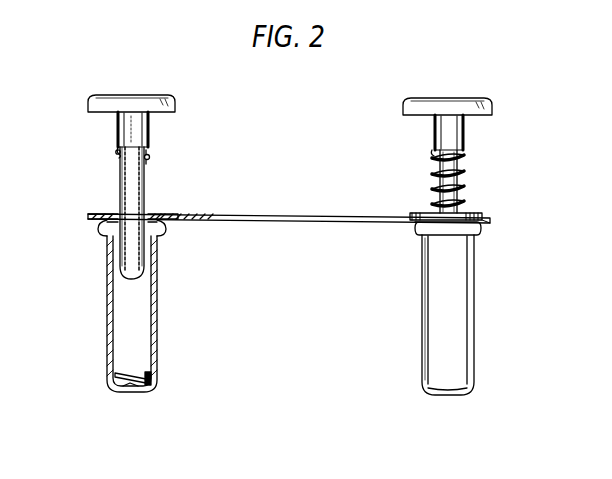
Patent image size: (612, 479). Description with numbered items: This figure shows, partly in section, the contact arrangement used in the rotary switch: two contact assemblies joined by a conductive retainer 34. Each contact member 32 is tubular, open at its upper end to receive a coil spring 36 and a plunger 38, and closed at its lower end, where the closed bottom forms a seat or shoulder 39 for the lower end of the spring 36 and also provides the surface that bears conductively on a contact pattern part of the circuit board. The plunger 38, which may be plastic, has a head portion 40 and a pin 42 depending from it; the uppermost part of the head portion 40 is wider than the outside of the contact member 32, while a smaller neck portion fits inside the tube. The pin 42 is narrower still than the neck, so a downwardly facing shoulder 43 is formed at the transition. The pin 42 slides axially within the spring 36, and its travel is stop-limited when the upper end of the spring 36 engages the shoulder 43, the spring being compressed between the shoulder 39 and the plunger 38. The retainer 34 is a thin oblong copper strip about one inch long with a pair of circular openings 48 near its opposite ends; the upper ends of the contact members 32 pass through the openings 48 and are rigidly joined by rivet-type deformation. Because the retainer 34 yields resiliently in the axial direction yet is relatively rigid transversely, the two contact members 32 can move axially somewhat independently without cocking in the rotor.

The contact member 32 is at (107, 300).
The retainer 34 is at (316, 216).
The spring 36 is at (151, 157).
The plunger 38 is at (152, 128).
The shoulder 39 is at (137, 390).
The head portion 40 is at (135, 95).
The pin 42 is at (128, 176).
The shoulder 43 is at (116, 152).
The circular opening 48 is at (110, 217).